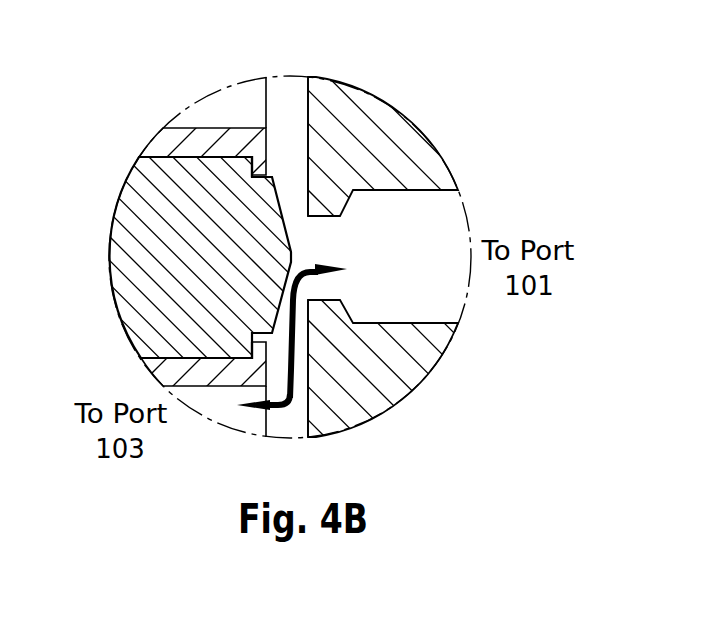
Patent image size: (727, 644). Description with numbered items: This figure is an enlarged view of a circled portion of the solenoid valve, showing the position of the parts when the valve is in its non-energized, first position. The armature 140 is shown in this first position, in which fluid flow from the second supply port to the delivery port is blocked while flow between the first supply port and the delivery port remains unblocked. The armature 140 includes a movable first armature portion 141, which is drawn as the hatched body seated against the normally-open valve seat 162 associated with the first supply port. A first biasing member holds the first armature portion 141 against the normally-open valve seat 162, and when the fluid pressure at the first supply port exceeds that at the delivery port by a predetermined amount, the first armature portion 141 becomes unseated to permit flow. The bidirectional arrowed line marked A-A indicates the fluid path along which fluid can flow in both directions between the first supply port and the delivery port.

The armature 140 is at (213, 130).
The first armature portion 141 is at (131, 185).
The normally-open valve seat 162 is at (310, 301).